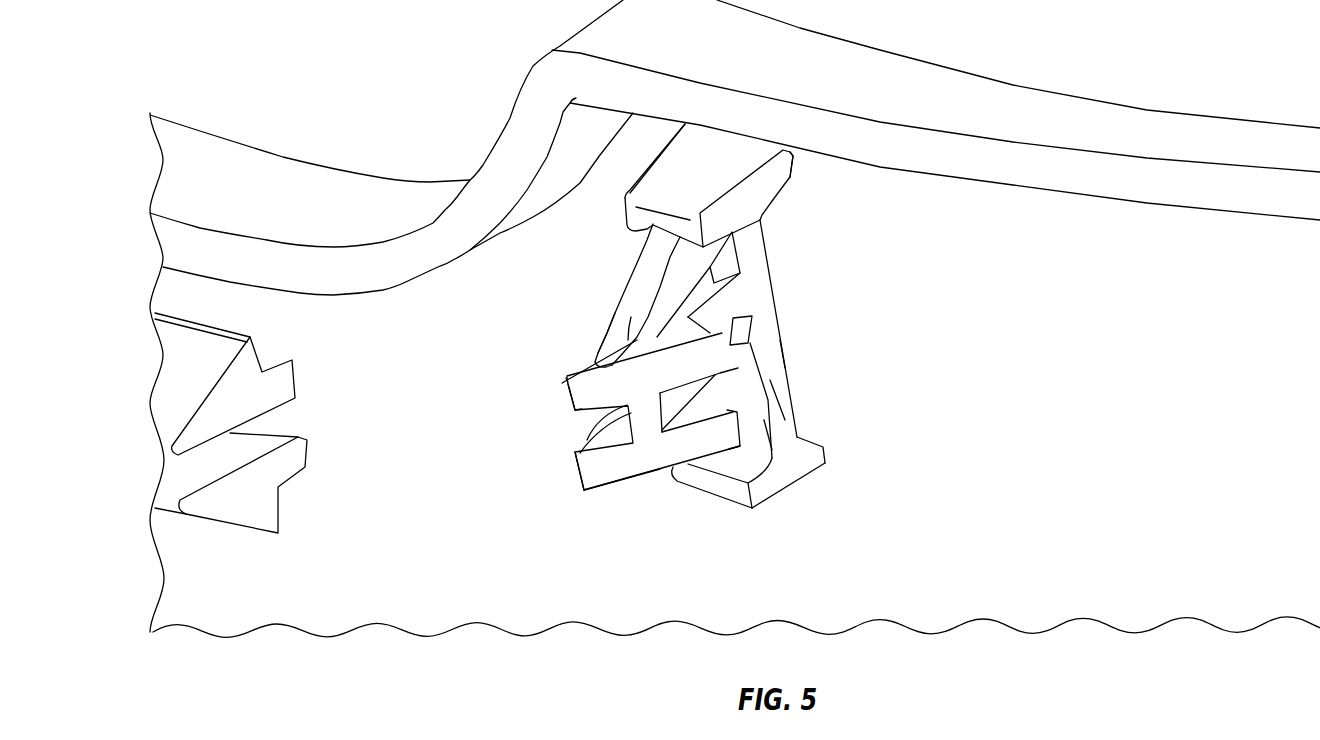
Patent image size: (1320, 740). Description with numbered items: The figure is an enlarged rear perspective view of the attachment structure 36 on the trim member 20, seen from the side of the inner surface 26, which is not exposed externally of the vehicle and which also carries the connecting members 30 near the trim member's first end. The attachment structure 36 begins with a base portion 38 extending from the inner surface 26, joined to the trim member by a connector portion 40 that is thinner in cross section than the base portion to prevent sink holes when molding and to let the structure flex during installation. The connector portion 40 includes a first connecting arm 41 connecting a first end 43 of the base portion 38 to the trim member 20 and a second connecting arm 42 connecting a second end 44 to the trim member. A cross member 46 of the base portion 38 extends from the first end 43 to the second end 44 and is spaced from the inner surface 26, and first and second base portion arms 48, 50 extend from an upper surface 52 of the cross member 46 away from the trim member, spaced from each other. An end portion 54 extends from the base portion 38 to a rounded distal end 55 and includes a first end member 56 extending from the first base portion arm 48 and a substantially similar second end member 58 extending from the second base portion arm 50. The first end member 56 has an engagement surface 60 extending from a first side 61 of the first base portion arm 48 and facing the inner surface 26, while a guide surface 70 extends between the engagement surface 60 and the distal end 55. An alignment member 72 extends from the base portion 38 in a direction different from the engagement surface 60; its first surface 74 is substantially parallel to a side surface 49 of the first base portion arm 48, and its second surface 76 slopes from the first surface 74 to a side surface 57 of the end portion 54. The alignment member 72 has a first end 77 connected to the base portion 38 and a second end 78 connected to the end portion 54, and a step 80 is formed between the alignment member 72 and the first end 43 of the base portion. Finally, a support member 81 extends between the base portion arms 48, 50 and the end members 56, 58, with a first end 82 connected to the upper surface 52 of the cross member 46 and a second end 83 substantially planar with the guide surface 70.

The trim member 20 is at (953, 66).
The inner surface 26 is at (977, 563).
The connecting members 30 is at (265, 499).
The attachment structure 36 is at (764, 512).
The base portion 38 is at (770, 396).
The connector portion 40 is at (784, 176).
The first connecting arm 41 is at (793, 157).
The second connecting arm 42 is at (826, 452).
The first end 43 is at (740, 157).
The second end 44 is at (800, 483).
The cross member 46 is at (787, 341).
The first base portion arm 48 is at (712, 296).
The side surface 49 is at (722, 270).
The second base portion arm 50 is at (797, 398).
The upper surface 52 is at (760, 425).
The end portion 54 is at (605, 487).
The distal end 55 is at (578, 405).
The first end member 56 is at (569, 365).
The side surface 57 is at (594, 417).
The second end member 58 is at (635, 483).
The engagement surface 60 is at (718, 338).
The first side 61 is at (727, 302).
The guide surface 70 is at (670, 378).
The alignment member 72 is at (618, 293).
The first surface 74 is at (650, 242).
The second surface 76 is at (613, 325).
The first end 77 is at (650, 223).
The second end 78 is at (570, 382).
The step 80 is at (662, 218).
The support member 81 is at (600, 450).
The first end 82 is at (738, 333).
The second end 83 is at (596, 480).